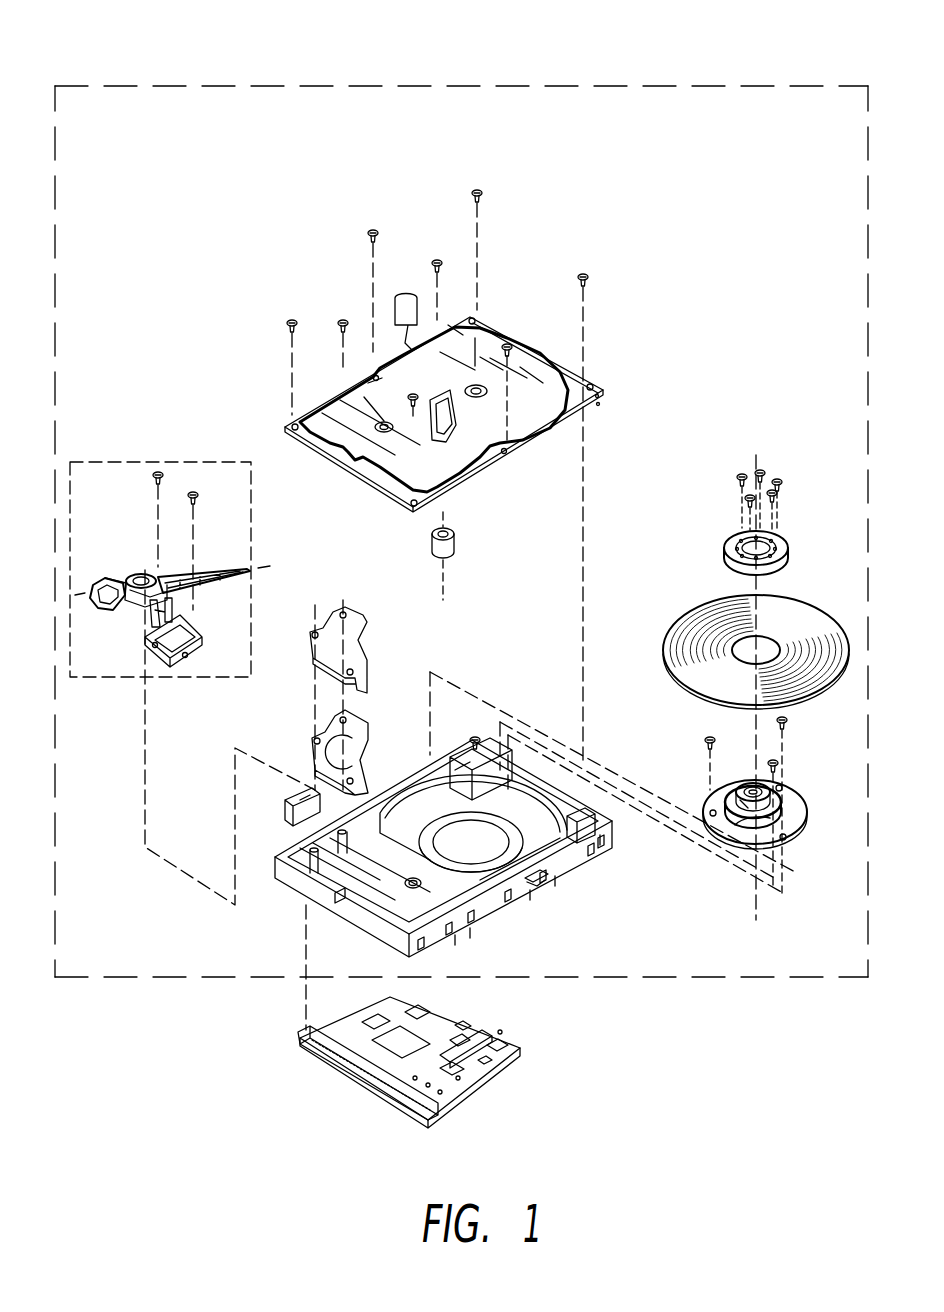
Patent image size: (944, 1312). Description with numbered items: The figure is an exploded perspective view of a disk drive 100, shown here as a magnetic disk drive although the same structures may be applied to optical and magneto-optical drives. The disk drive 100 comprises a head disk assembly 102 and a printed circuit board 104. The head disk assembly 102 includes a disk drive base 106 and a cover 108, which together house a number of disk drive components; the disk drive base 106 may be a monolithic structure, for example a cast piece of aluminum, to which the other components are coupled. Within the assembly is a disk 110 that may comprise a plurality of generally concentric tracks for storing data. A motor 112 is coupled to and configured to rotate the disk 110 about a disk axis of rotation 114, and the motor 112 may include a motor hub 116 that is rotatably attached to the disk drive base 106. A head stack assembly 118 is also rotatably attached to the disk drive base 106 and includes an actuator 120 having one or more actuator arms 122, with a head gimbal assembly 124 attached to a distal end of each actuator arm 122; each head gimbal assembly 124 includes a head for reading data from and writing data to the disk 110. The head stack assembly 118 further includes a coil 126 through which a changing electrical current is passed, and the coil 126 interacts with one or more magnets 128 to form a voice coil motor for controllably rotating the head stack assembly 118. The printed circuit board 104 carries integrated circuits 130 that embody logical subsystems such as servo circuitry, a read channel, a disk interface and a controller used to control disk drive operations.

The disk drive 100 is at (233, 60).
The head disk assembly 102 is at (512, 86).
The printed circuit board 104 is at (508, 1057).
The disk drive base 106 is at (490, 920).
The cover 108 is at (532, 416).
The disk 110 is at (692, 613).
The motor 112 is at (798, 806).
The disk axis of rotation 114 is at (758, 452).
The motor hub 116 is at (747, 812).
The head stack assembly 118 is at (190, 462).
The actuator 120 is at (205, 603).
The actuator arm 122 is at (178, 573).
The head gimbal assembly 124 is at (223, 566).
The coil 126 is at (97, 613).
The magnet 128 is at (350, 723).
The integrated circuit 130 is at (337, 1070).